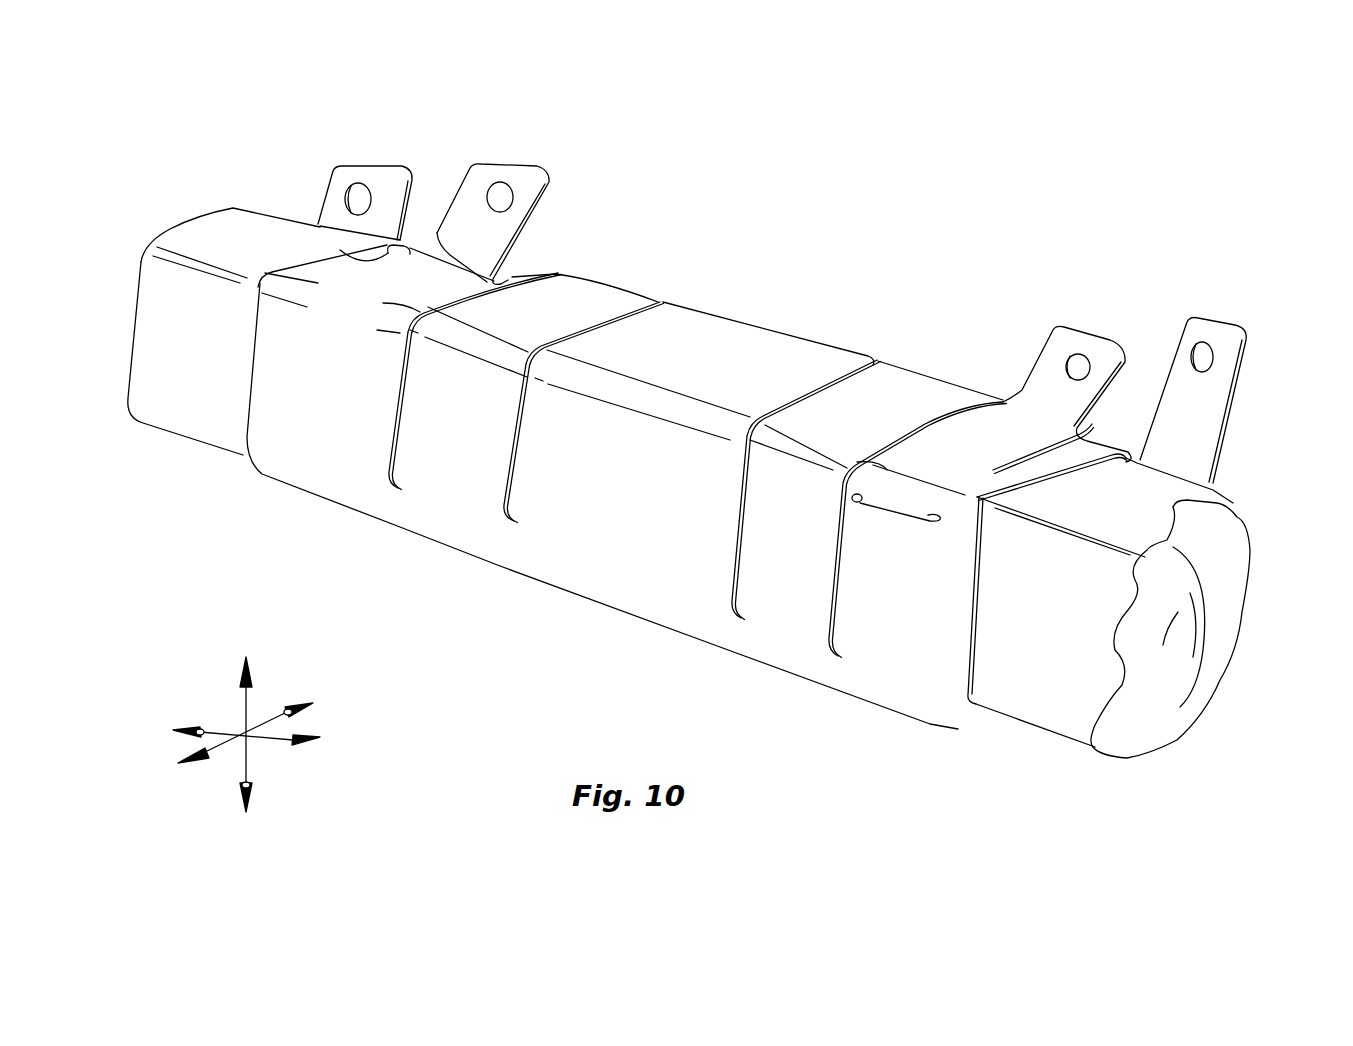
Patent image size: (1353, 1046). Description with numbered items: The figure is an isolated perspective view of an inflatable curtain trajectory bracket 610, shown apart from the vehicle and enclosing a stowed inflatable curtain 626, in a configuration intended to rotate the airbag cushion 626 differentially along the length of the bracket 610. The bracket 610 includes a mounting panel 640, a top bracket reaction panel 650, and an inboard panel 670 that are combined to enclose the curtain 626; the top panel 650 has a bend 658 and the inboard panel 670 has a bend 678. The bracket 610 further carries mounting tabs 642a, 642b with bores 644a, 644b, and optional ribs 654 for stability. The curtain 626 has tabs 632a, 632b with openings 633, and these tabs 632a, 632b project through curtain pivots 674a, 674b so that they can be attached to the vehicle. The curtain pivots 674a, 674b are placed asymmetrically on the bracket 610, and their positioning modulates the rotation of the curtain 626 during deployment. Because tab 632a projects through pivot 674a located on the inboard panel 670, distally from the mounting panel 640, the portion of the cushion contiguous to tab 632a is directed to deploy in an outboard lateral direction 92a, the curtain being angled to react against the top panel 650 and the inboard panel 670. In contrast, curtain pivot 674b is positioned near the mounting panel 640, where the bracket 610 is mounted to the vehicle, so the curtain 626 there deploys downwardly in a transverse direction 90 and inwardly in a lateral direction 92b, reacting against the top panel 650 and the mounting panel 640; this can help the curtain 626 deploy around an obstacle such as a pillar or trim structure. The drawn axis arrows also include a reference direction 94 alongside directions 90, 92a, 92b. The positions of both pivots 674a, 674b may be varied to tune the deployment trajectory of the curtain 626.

The inflatable curtain trajectory bracket 610 is at (883, 264).
The inflatable curtain 626 is at (1165, 698).
The tab 632a is at (1106, 366).
The tab 632b is at (528, 198).
The opening 633 is at (502, 183).
The mounting panel 640 is at (1140, 463).
The mounting tab 642a is at (1207, 330).
The mounting tab 642b is at (366, 175).
The bore 644a is at (1203, 362).
The bore 644b is at (357, 184).
The top bracket reaction panel 650 is at (704, 347).
The rib 654 is at (540, 273).
The bend 658 is at (620, 390).
The inboard panel 670 is at (912, 680).
The curtain pivot 674a is at (858, 507).
The curtain pivot 674b is at (330, 251).
The bend 678 is at (777, 617).
The transverse direction 90 is at (250, 757).
The outboard lateral direction 92a is at (275, 715).
The inward lateral direction 92b is at (220, 755).
The longitudinal axis 94 is at (232, 730).